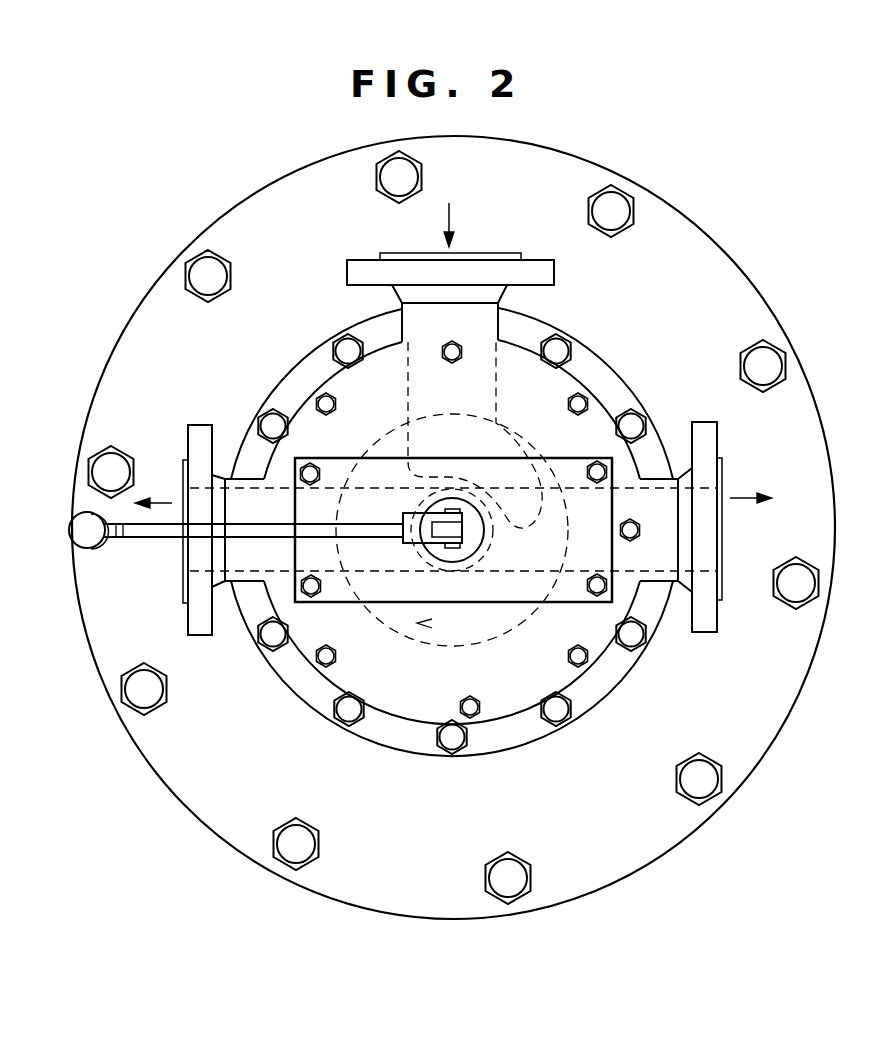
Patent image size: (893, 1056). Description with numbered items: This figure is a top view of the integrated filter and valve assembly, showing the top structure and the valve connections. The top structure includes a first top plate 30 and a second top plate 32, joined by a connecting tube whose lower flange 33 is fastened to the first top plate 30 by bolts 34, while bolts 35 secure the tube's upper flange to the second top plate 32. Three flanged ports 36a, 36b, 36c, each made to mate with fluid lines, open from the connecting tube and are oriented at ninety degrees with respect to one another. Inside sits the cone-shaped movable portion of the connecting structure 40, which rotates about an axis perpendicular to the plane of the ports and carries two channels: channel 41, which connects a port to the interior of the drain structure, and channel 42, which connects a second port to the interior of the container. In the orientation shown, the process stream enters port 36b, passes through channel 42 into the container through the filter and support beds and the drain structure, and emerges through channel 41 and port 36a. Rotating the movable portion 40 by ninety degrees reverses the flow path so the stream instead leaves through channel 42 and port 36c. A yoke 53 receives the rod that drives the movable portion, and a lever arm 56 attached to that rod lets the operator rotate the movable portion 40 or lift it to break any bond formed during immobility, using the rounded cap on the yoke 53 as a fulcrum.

The first top plate 30 is at (258, 783).
The second top plate 32 is at (412, 697).
The lower flange 33 is at (320, 697).
The bolts 34 is at (463, 742).
The bolts 35 is at (472, 703).
The port 36a is at (218, 552).
The port 36b is at (450, 272).
The port 36c is at (702, 532).
The movable portion of the connecting structure 40 is at (507, 622).
The channel 41 is at (366, 603).
The channel 42 is at (500, 421).
The yoke 53 is at (338, 586).
The lever arm 56 is at (132, 538).